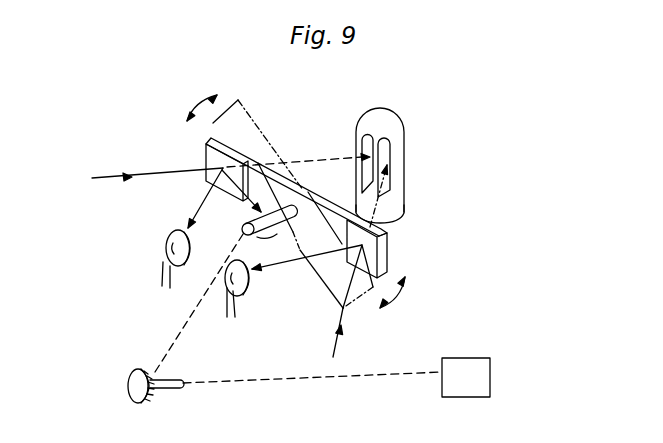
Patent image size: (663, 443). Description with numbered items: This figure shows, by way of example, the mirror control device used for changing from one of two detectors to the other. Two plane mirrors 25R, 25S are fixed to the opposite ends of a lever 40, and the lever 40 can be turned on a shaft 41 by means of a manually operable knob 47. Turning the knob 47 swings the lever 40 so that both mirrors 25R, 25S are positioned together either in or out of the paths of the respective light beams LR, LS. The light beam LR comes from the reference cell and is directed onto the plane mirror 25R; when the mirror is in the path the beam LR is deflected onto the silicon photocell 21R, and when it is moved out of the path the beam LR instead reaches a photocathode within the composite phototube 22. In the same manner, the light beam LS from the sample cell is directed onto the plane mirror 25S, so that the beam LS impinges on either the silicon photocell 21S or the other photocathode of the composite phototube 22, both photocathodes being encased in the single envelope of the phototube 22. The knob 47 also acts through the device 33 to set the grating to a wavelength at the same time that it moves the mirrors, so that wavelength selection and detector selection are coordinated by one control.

The composite phototube 22 is at (393, 112).
The plane mirror 25R is at (213, 160).
The plane mirror 25S is at (378, 261).
The lever 40 is at (323, 208).
The shaft 41 is at (285, 204).
The silicon photocell 21R is at (167, 247).
The silicon photocell 21S is at (249, 292).
The manually operable knob 47 is at (137, 376).
The device 33 is at (468, 358).
The light beam LR is at (107, 175).
The light beam LS is at (334, 347).